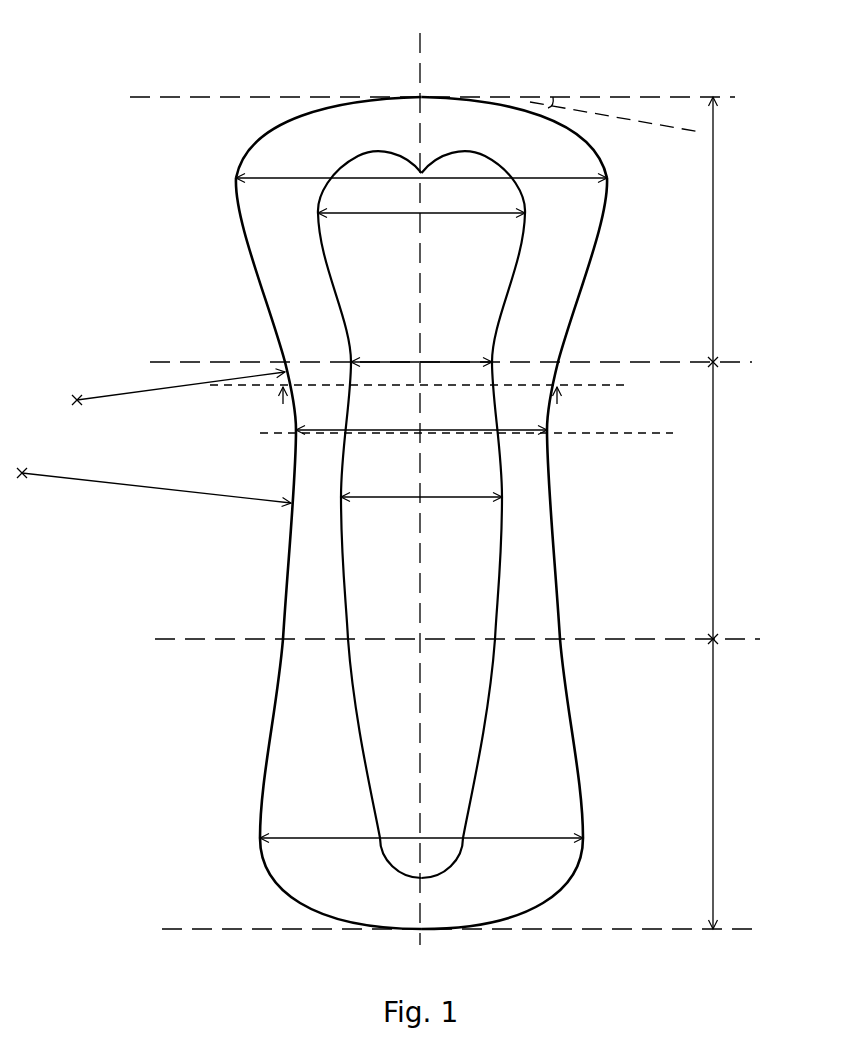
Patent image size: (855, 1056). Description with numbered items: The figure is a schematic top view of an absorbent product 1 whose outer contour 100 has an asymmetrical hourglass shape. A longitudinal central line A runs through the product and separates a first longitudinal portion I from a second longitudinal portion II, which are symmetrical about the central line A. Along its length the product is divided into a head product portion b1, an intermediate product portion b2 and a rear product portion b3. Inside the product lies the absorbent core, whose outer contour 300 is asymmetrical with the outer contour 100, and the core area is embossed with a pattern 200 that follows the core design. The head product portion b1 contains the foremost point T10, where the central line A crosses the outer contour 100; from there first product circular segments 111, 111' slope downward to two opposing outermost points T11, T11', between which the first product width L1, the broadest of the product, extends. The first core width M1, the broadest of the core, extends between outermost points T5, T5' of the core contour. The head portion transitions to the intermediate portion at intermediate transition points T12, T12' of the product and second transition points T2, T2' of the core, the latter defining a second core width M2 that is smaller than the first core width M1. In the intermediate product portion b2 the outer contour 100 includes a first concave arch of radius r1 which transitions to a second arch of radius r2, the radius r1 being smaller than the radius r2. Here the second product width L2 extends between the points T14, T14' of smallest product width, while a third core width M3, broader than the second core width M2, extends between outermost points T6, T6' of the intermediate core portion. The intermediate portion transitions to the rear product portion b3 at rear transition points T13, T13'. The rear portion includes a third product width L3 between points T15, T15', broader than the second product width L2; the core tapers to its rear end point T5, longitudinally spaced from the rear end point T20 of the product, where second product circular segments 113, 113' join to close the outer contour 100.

The absorbent product 1 is at (574, 82).
The outer contour of the absorbent product 100 is at (576, 738).
The first product circular segment 111 is at (560, 137).
The first product circular segment 111' is at (277, 137).
The second product circular segment 113 is at (551, 883).
The second product circular segment 113' is at (294, 883).
The embossing pattern 200 is at (475, 560).
The outer contour of the absorbent core 300 is at (342, 598).
The longitudinal central line A is at (422, 47).
The first longitudinal portion I is at (356, 92).
The second longitudinal portion II is at (483, 94).
The foremost point T10 is at (424, 96).
The rear end point of the absorbent product T20 is at (425, 930).
The outermost point T11 is at (646, 206).
The outermost point T11' is at (198, 211).
The outermost point of the core contour / rear end point of the core T5 is at (485, 572).
The outermost point of the core contour T5' is at (292, 234).
The intermediate transition point T12 is at (591, 340).
The intermediate transition point T12' is at (250, 342).
The second transition point of the core T2 is at (520, 340).
The second transition point of the core T2' is at (318, 342).
The point of smallest product width T14 is at (592, 454).
The point of smallest product width T14' is at (267, 453).
The outermost point of the intermediate core portion T6 is at (522, 482).
The outermost point of the intermediate core portion T6' is at (322, 474).
The rear transition point T13 is at (599, 662).
The rear transition point T13' is at (246, 669).
The rear width point T15 is at (630, 814).
The rear width point T15' is at (207, 820).
The first product width L1 is at (321, 177).
The second product width L2 is at (458, 432).
The third product width L3 is at (305, 838).
The first core width M1 is at (467, 214).
The second core width M2 is at (392, 361).
The third core width M3 is at (388, 498).
The offset distance a is at (421, 407).
The head product portion b1 is at (714, 235).
The intermediate product portion b2 is at (714, 476).
The rear product portion b3 is at (714, 751).
The radius of the first concave arch-shaped portion r1 is at (83, 398).
The radius of the second arch-shaped portion r2 is at (99, 481).